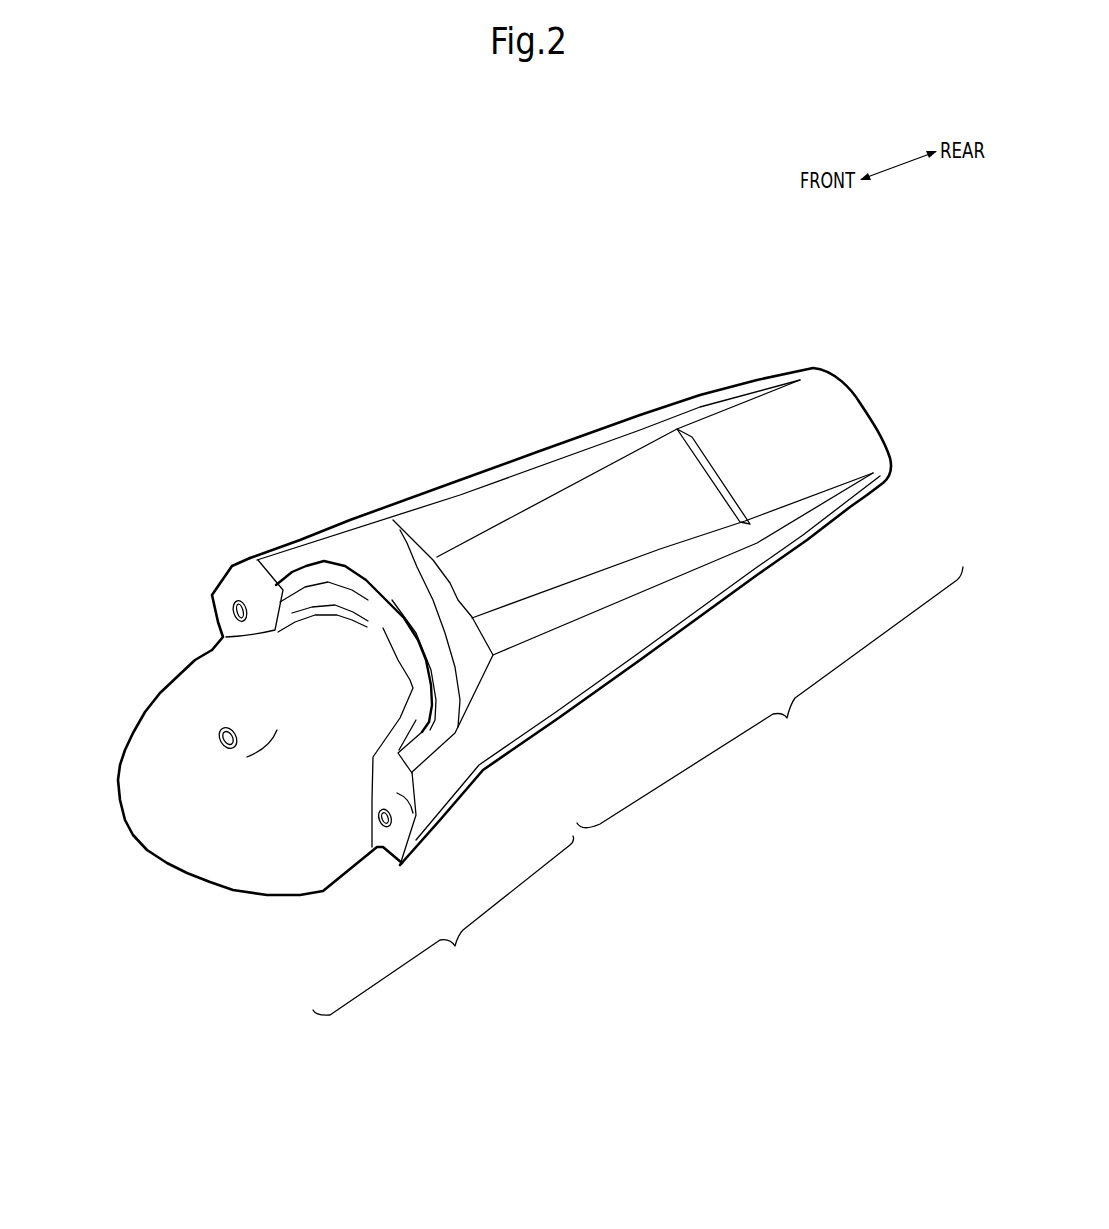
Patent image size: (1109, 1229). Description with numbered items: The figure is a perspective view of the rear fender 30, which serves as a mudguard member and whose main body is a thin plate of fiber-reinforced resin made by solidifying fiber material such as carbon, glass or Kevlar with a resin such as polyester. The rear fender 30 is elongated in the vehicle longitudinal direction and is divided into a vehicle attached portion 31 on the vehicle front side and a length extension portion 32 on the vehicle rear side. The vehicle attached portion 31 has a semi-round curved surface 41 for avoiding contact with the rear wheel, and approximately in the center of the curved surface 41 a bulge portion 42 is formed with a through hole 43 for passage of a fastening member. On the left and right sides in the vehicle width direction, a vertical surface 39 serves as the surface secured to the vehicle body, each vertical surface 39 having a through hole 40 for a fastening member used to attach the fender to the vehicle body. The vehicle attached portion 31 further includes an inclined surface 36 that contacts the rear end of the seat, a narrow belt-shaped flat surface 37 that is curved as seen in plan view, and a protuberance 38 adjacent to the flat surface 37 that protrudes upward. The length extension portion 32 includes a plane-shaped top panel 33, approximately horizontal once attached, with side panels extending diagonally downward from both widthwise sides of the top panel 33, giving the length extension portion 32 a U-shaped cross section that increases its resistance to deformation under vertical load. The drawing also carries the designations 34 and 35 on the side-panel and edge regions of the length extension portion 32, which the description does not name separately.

The rear fender 30 is at (458, 324).
The vehicle attached portion 31 is at (443, 925).
The length extension portion 32 is at (770, 697).
The top panel 33 is at (647, 497).
The side wall 34 is at (598, 437).
The flange 35 is at (534, 452).
The inclined surface 36 is at (430, 572).
The flat surface 37 is at (373, 567).
The protuberance 38 is at (343, 582).
The vertical surface 39 is at (231, 588).
The through hole 40 is at (228, 612).
The curved surface 41 is at (247, 830).
The bulge portion 42 is at (252, 713).
The through hole 43 is at (212, 749).